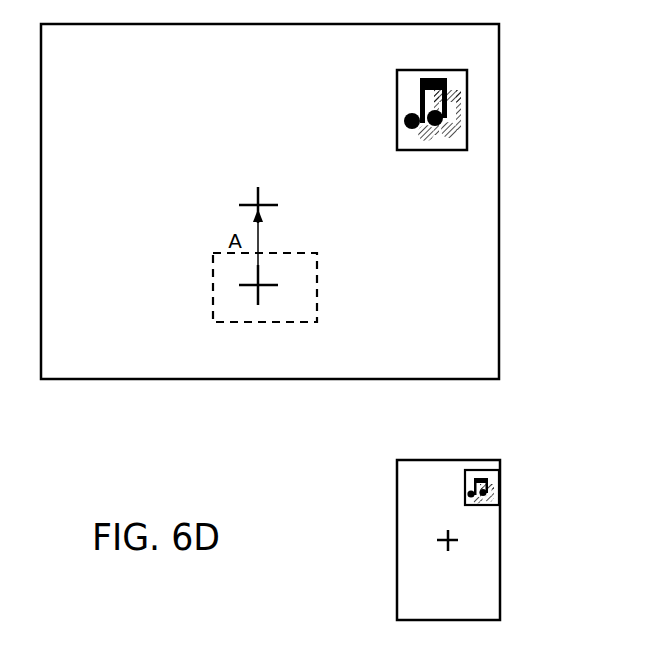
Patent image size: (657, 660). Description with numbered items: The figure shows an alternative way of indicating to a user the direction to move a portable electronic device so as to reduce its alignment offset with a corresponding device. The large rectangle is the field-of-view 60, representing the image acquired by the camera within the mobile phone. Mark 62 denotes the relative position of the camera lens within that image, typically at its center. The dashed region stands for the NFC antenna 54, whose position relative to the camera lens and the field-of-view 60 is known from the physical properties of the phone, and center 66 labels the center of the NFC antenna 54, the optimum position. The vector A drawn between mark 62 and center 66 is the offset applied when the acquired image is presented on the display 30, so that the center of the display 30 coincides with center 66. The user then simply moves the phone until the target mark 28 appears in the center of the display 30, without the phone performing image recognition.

The target mark 28 is at (450, 277).
The display 30 is at (396, 540).
The NFC antenna 54 is at (326, 287).
The field-of-view 60 is at (270, 239).
The mark 62 is at (203, 170).
The center of the NFC antenna 66 is at (294, 427).